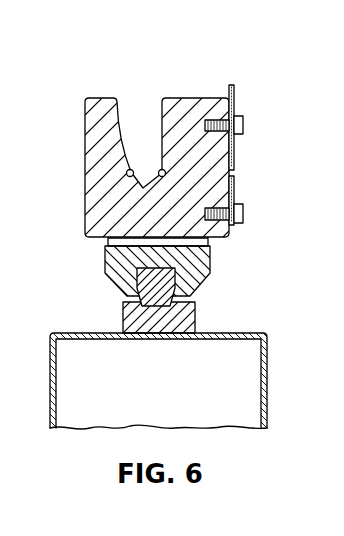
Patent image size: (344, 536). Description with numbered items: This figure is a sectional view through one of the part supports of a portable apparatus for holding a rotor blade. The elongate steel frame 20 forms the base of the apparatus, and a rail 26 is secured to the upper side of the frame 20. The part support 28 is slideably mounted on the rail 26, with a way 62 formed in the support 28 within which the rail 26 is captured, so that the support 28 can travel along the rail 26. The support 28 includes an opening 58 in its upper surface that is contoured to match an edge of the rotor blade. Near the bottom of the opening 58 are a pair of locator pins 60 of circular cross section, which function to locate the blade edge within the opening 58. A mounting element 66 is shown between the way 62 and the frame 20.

The frame 20 is at (268, 392).
The rail 26 is at (177, 295).
The part support 28 is at (166, 174).
The opening 58 is at (139, 104).
The locator pins 60 is at (126, 174).
The way 62 is at (190, 263).
The mounting block 66 is at (173, 333).